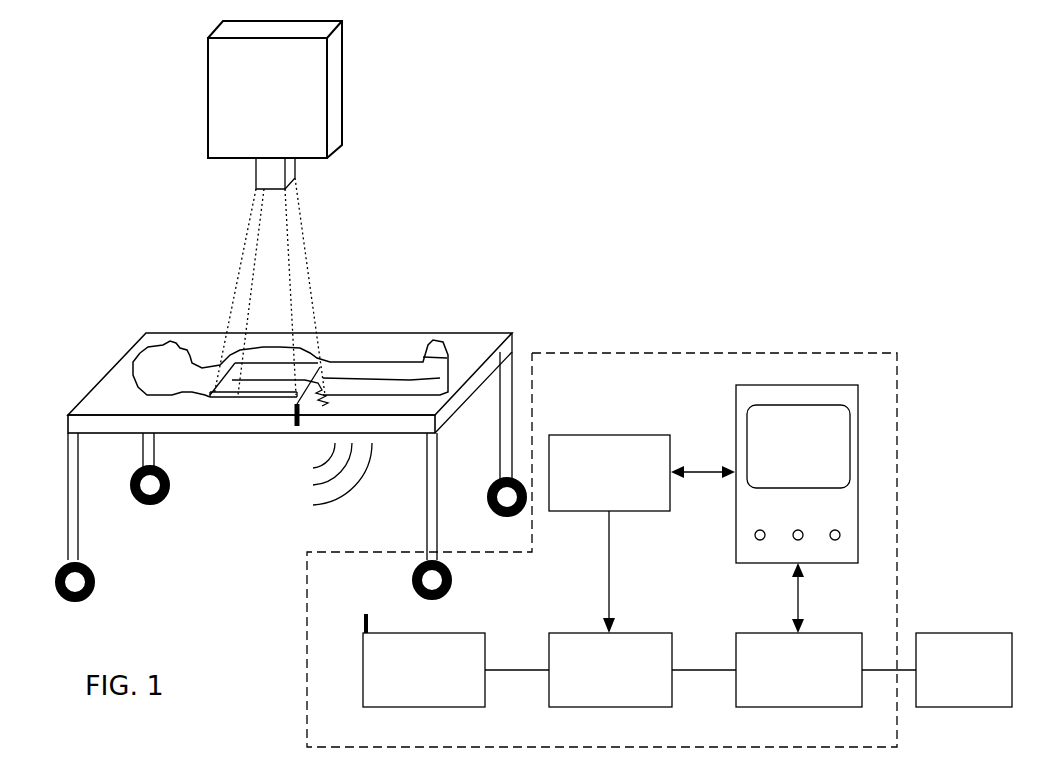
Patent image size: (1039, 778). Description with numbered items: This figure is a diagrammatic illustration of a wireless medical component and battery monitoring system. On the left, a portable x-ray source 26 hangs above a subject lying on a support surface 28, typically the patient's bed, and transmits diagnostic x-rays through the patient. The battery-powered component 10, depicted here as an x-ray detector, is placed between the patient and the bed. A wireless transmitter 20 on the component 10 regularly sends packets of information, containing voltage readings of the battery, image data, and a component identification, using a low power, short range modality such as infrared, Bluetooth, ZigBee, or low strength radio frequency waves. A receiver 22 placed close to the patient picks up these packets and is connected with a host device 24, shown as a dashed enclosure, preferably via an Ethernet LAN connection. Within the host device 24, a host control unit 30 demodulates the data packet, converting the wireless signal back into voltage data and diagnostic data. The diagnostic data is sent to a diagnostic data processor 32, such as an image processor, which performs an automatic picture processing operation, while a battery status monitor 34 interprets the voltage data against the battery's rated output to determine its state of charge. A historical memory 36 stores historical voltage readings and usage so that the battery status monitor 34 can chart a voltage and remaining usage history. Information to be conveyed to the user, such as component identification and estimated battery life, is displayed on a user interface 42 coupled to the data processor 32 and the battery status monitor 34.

The component 10 is at (244, 418).
The wireless transmitter 20 is at (292, 421).
The receiver 22 is at (410, 633).
The host device 24 is at (608, 322).
The x-ray source 26 is at (258, 111).
The support surface 28 is at (418, 333).
The host control unit 30 is at (655, 633).
The diagnostic data processor 32 is at (586, 435).
The battery status monitor 34 is at (813, 633).
The historical memory 36 is at (950, 633).
The user interface 42 is at (736, 395).